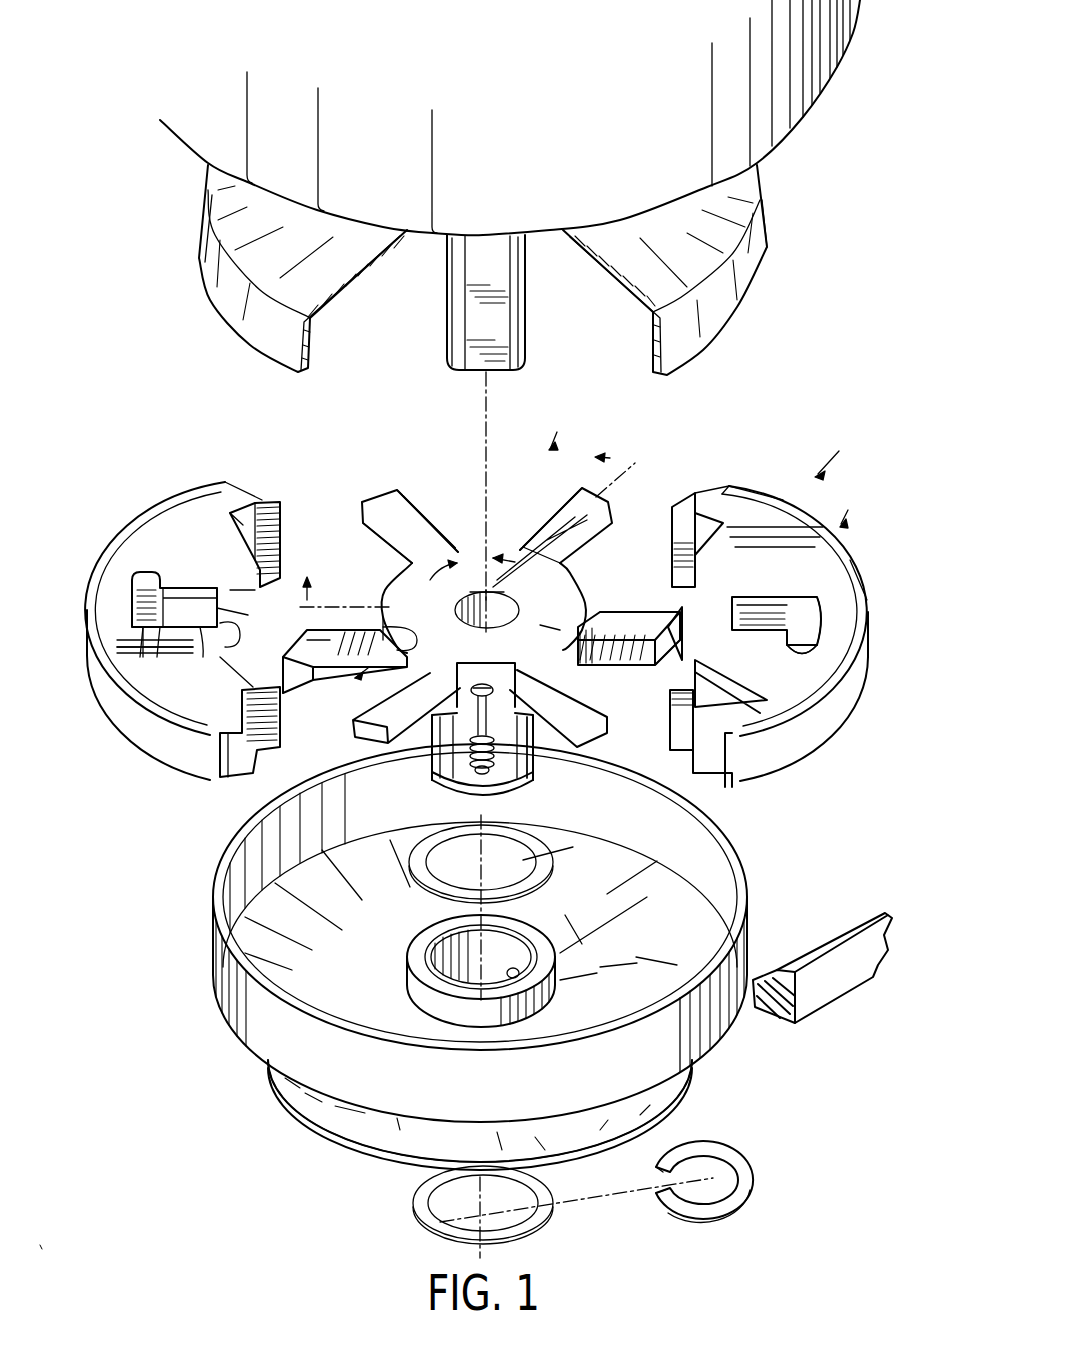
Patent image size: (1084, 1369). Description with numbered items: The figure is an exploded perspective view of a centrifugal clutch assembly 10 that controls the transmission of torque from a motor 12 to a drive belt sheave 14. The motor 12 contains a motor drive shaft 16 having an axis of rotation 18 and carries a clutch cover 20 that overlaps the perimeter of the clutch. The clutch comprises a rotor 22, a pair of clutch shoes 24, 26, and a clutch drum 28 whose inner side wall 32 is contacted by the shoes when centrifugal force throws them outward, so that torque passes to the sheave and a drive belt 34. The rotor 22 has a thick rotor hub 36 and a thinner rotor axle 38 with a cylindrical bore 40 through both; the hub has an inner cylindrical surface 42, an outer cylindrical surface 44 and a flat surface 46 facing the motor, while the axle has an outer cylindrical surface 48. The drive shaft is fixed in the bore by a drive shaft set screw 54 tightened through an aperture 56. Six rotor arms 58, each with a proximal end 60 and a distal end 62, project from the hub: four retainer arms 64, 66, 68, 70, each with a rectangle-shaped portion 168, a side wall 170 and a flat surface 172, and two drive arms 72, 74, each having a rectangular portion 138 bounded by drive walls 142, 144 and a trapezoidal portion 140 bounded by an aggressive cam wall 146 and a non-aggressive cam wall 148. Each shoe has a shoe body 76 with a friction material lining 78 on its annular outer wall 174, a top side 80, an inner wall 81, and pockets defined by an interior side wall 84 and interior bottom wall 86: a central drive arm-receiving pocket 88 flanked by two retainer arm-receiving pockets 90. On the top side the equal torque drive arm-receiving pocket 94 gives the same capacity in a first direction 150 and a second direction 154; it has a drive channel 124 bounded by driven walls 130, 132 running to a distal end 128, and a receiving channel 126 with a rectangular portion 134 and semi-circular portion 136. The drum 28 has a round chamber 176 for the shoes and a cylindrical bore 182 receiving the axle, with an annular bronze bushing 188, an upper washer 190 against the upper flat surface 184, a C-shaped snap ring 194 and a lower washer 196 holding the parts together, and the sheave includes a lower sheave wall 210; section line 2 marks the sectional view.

The centrifugal clutch assembly 10 is at (790, 462).
The motor 12 is at (208, 158).
The drive belt sheave 14 is at (682, 1092).
The motor drive shaft 16 is at (526, 343).
The axis of rotation 18 is at (491, 442).
The clutch cover 20 is at (312, 347).
The rotor 22 is at (552, 484).
The clutch shoe 24 is at (853, 542).
The clutch shoe 26 is at (126, 510).
The clutch drum 28 is at (752, 925).
The inner side wall 32 is at (733, 900).
The drive belt 34 is at (827, 993).
The rotor hub 36 is at (437, 755).
The rotor axle 38 is at (535, 772).
The cylindrical bore 40 is at (478, 592).
The inner cylindrical surface 42 is at (513, 597).
The outer cylindrical surface 44 is at (480, 655).
The flat surface 46 is at (554, 616).
The outer cylindrical surface 48 is at (455, 790).
The drive shaft set screw 54 is at (490, 770).
The aperture 56 is at (487, 695).
The rotor arm 58 is at (402, 495).
The proximal end 60 is at (427, 557).
The distal end 62 is at (373, 502).
The retainer arm 64 is at (412, 512).
The retainer arm 66 is at (392, 740).
The retainer arm 68 is at (597, 735).
The retainer arm 70 is at (608, 523).
The drive arm 72 is at (353, 688).
The drive arm 74 is at (613, 627).
The shoe body 76 is at (190, 524).
The friction material lining 78 is at (158, 740).
The top side 80 is at (227, 502).
The inner wall 81 is at (242, 588).
The interior side wall 84 is at (248, 512).
The interior bottom wall 86 is at (280, 520).
The drive arm-receiving pocket 88 is at (178, 607).
The retainer arm-receiving pocket 90 is at (262, 512).
The equal torque drive arm-receiving pocket 94 is at (163, 590).
The drive channel 124 is at (200, 627).
The receiving channel 126 is at (147, 627).
The distal end 128 is at (163, 620).
The driven wall 130 is at (235, 688).
The driven wall 132 is at (248, 615).
The rectangular portion 134 is at (132, 605).
The semi-circular portion 136 is at (137, 570).
The rectangular portion 138 is at (397, 637).
The trapezoidal portion 140 is at (283, 657).
The drive wall 142 is at (323, 627).
The drive wall 144 is at (367, 637).
The aggressive cam wall 146 is at (658, 686).
The non-aggressive cam wall 148 is at (300, 690).
The first direction 150 is at (465, 582).
The second direction 154 is at (505, 557).
The rectangle-shaped portion 168 is at (392, 492).
The side wall 170 is at (373, 527).
The flat surface 172 is at (577, 508).
The annular outer wall 174 is at (240, 767).
The round chamber 176 is at (663, 897).
The cylindrical bore 182 is at (470, 965).
The upper flat surface 184 is at (570, 942).
The annular bronze bushing 188 is at (520, 978).
The upper washer 190 is at (556, 858).
The C-shaped snap ring 194 is at (740, 1158).
The lower washer 196 is at (537, 1215).
The lower sheave wall 210 is at (337, 1123).
The section line 2 is at (467, 518).